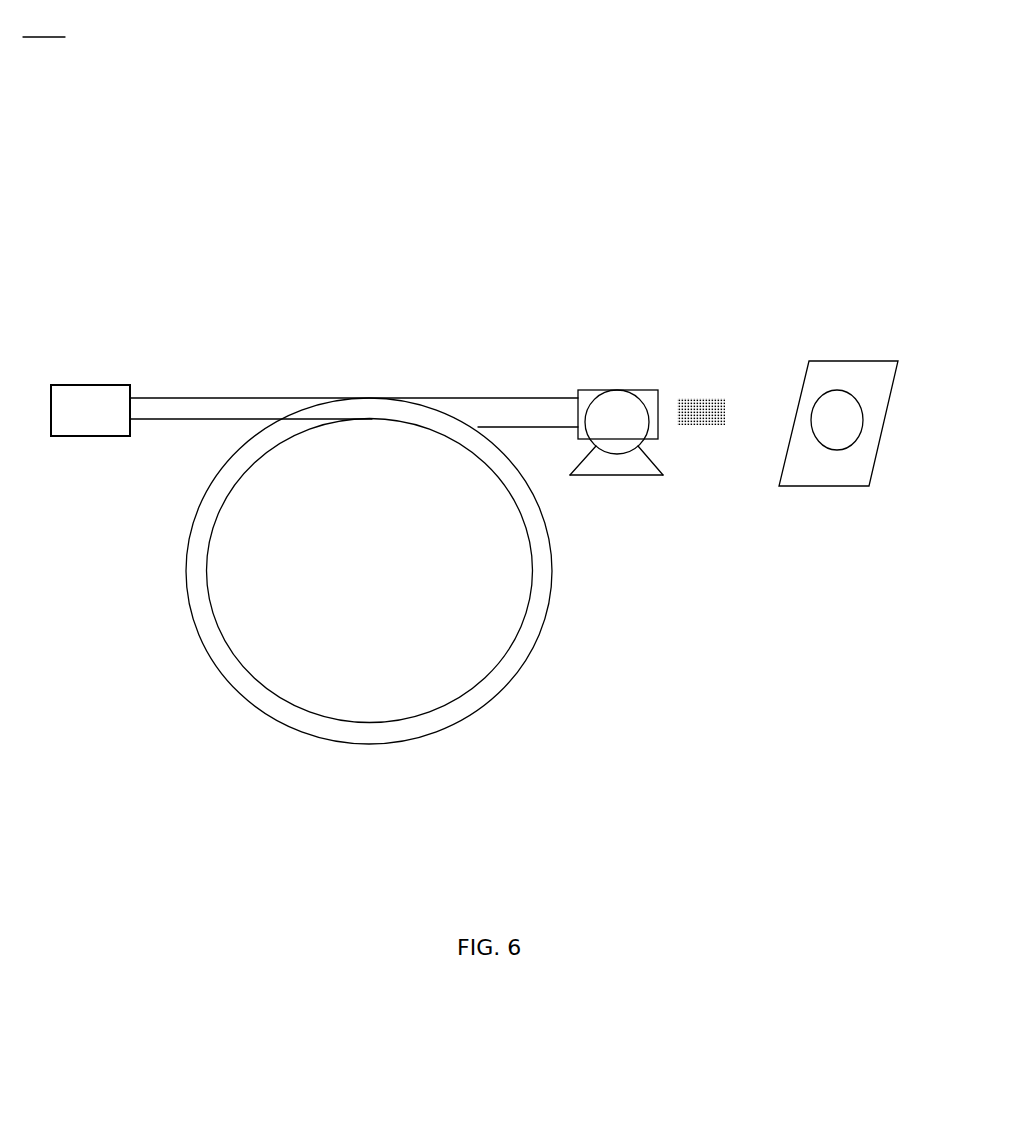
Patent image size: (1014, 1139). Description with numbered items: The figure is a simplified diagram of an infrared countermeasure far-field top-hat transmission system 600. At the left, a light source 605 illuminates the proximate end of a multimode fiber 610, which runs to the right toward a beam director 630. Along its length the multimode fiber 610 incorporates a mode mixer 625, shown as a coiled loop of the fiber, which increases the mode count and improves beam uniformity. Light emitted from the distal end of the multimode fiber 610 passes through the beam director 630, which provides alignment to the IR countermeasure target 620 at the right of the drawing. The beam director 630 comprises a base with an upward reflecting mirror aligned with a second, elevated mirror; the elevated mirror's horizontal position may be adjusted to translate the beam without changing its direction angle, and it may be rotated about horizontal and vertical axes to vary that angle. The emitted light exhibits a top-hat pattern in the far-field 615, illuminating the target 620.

The infrared countermeasure far-field top-hat transmission system 600 is at (44, 24).
The light source 605 is at (67, 437).
The multimode fiber 610 is at (260, 398).
The far-field 615 is at (695, 388).
The IR countermeasure target 620 is at (858, 485).
The mode mixer 625 is at (203, 648).
The beam director 630 is at (650, 477).